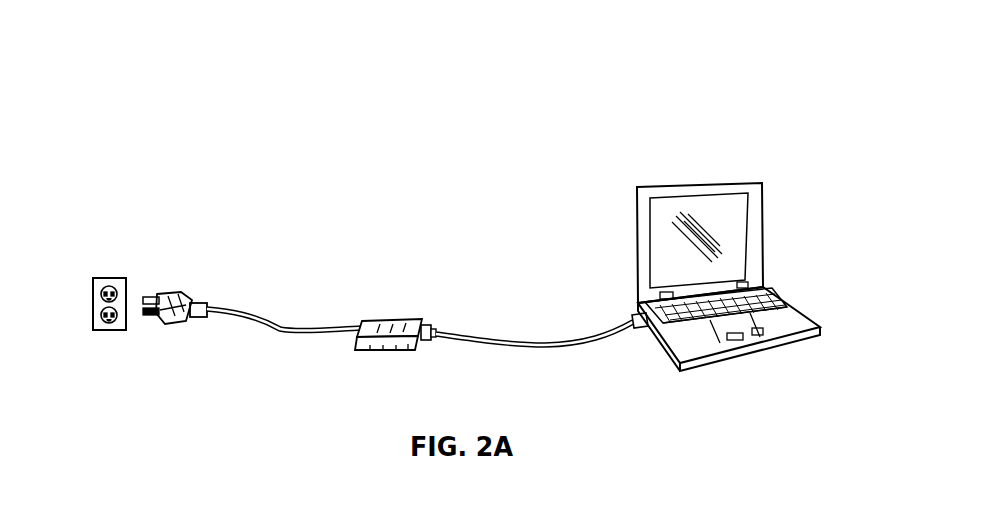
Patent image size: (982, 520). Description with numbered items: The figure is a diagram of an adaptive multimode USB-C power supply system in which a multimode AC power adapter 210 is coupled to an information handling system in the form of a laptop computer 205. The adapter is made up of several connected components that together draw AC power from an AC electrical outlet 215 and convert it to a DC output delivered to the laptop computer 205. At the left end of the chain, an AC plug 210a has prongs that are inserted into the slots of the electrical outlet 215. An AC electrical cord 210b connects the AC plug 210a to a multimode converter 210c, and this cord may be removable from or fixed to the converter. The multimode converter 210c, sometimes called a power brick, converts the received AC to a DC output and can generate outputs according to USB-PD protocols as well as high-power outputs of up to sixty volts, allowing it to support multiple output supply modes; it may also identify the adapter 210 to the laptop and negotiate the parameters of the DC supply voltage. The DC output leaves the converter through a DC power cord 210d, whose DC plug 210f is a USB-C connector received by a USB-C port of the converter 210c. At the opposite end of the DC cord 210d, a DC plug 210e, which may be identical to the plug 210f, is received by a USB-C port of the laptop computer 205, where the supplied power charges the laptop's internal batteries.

The laptop computer 205 is at (772, 290).
The multimode AC power adapter 210 is at (141, 300).
The AC plug 210a is at (165, 291).
The AC electrical cord 210b is at (213, 305).
The multimode converter 210c is at (378, 321).
The DC power cord 210d is at (540, 338).
The DC plug 210e is at (640, 333).
The DC plug 210f is at (428, 325).
The AC electrical outlet 215 is at (110, 332).